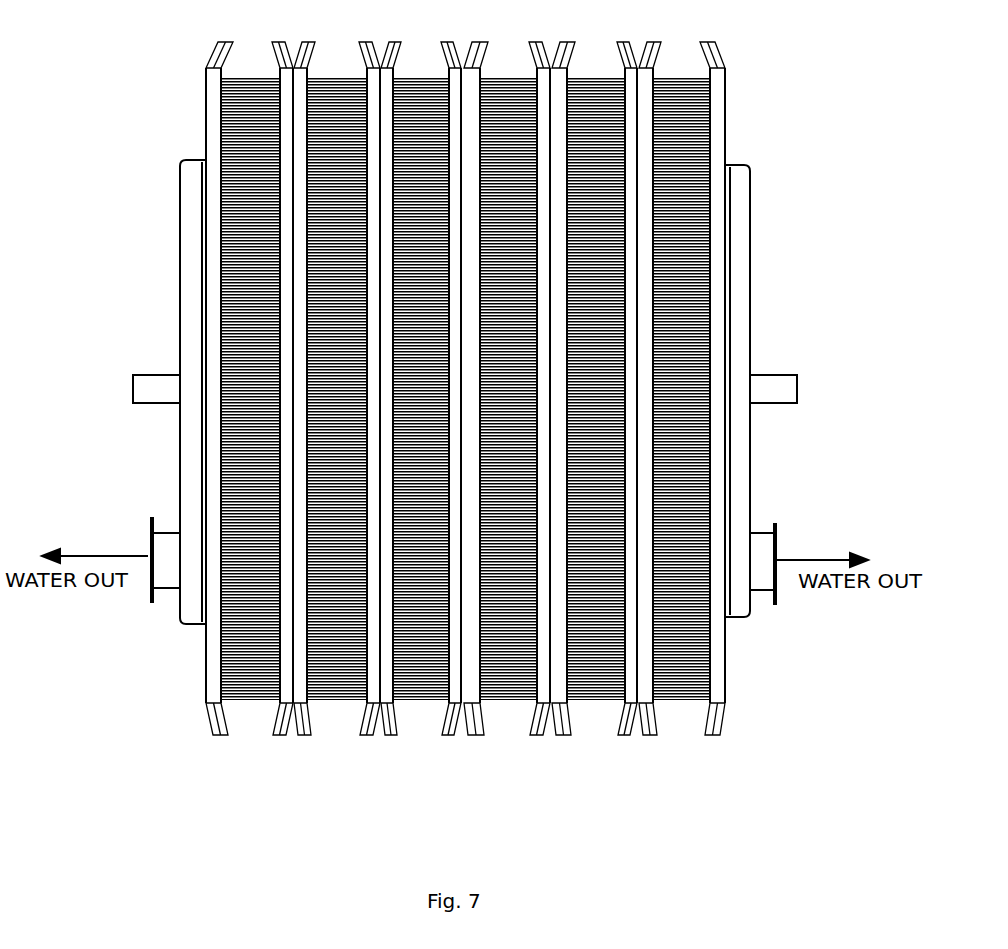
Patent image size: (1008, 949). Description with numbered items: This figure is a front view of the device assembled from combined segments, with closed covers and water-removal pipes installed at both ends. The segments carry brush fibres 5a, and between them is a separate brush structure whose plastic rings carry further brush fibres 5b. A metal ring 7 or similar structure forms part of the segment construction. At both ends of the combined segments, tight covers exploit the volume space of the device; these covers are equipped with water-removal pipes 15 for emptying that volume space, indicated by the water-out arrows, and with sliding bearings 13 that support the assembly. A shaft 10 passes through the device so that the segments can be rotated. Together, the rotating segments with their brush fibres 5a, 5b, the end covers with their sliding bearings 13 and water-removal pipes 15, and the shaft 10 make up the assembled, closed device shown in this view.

The brush fibres 5a is at (237, 146).
The brush fibres 5b is at (723, 51).
The metal ring 7 is at (637, 158).
The sliding bearings 13 is at (722, 230).
The shaft 10 is at (150, 385).
The water-removal pipes 15 is at (160, 547).